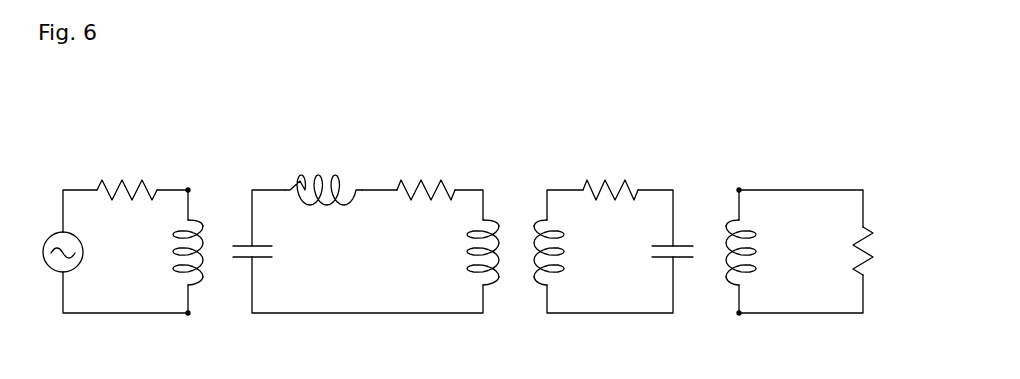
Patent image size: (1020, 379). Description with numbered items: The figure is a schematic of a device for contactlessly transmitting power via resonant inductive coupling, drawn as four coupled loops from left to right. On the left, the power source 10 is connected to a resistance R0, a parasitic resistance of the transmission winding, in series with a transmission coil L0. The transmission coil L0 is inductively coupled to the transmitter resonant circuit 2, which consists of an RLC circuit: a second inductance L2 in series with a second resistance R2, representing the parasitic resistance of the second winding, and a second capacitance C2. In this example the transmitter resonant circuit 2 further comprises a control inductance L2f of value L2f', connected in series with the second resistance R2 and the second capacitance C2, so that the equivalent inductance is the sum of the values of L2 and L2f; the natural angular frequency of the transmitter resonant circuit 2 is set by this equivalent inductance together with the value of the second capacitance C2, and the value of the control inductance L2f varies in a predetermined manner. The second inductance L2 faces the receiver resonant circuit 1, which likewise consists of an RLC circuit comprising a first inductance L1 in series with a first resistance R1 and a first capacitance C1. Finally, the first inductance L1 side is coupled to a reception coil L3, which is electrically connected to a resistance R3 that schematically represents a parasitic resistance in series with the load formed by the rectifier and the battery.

The power source 10 is at (46, 238).
The resistance R0 is at (138, 180).
The transmission coil L0 is at (199, 225).
The transmitter resonant circuit 2 is at (386, 128).
The second capacitance C2 is at (246, 258).
The control inductance L2f is at (300, 178).
The second resistance R2 is at (440, 178).
The second inductance L2 is at (496, 223).
The receiver resonant circuit 1 is at (674, 160).
The first inductance L1 is at (528, 282).
The first resistance R1 is at (600, 178).
The first capacitance C1 is at (684, 259).
The reception coil L3 is at (722, 225).
The resistance R3 is at (874, 232).